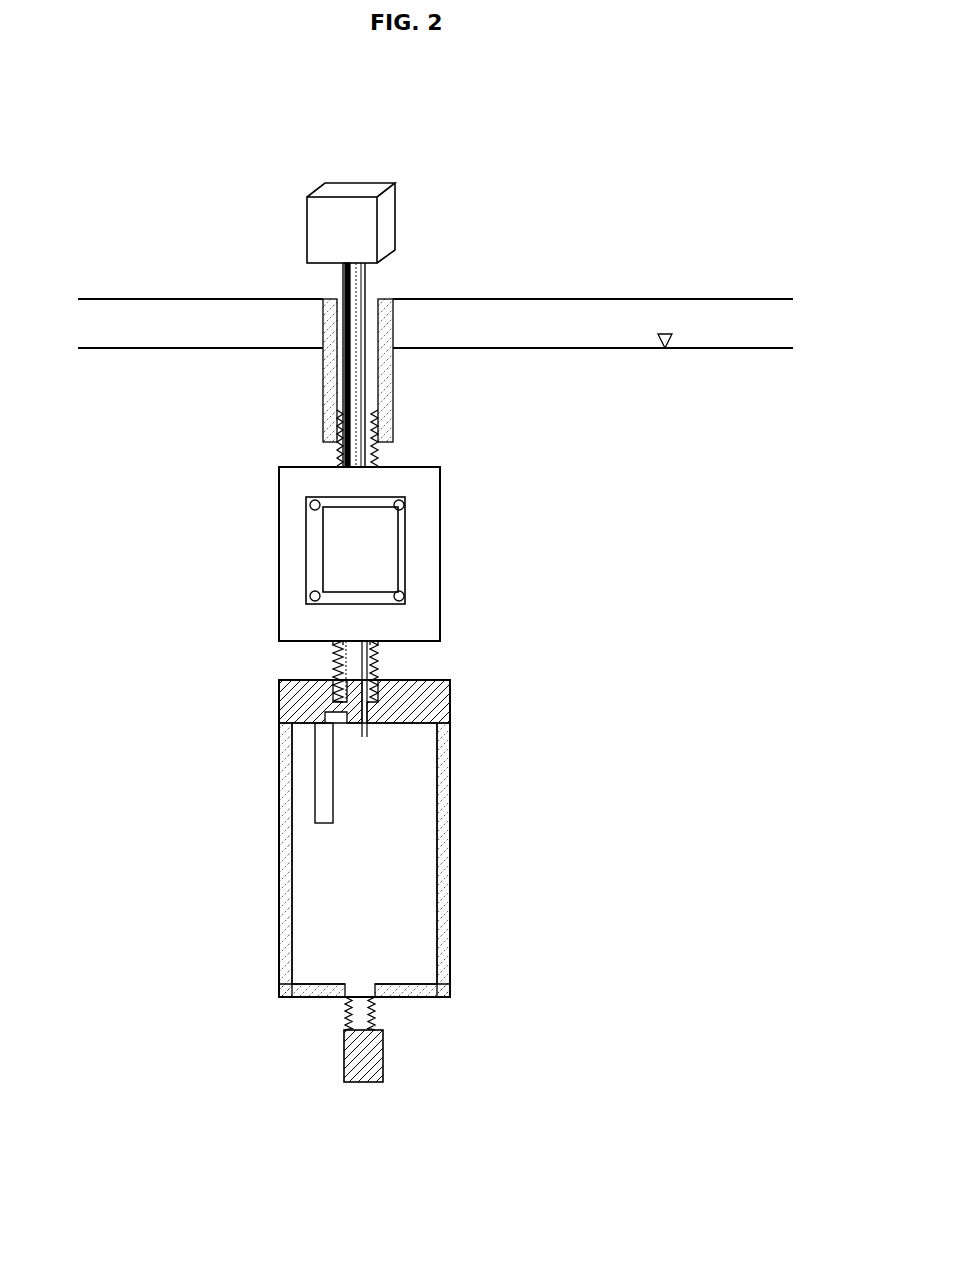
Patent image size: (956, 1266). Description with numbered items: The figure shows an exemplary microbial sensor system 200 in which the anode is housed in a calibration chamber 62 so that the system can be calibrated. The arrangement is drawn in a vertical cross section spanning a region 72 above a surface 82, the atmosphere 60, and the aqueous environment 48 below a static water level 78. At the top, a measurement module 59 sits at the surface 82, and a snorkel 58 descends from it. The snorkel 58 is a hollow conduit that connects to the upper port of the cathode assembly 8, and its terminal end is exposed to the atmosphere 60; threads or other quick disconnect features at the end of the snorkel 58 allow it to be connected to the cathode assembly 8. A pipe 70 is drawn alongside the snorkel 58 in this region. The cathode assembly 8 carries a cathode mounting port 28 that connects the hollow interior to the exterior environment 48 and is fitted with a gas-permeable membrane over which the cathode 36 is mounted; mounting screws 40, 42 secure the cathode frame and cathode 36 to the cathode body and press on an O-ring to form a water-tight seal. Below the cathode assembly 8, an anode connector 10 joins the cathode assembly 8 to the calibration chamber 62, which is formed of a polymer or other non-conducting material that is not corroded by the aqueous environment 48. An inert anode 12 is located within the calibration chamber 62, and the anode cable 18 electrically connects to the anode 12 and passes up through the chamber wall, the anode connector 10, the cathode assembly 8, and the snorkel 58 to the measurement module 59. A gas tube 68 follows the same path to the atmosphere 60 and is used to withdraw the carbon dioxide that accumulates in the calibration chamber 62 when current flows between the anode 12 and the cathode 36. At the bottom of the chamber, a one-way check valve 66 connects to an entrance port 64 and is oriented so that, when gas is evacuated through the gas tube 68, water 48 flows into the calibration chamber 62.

The microbial sensor system 200 is at (600, 130).
The atmosphere 60 is at (554, 156).
The exterior region 72 is at (133, 221).
The surface 82 is at (182, 302).
The static water level 78 is at (665, 328).
The aqueous environment 48 is at (730, 404).
The measurement module 59 is at (307, 251).
The gas tube 68 is at (368, 283).
The conduit pipe 70 is at (378, 365).
The snorkel 58 is at (327, 403).
The anode cable 18 is at (338, 455).
The cathode assembly 8 is at (258, 553).
The cathode mounting port 28 is at (373, 550).
The cathode 36 is at (360, 549).
The mounting screw 42 is at (403, 503).
The mounting screw 40 is at (404, 600).
The anode connector 10 is at (376, 681).
The inert anode 12 is at (334, 809).
The calibration chamber 62 is at (445, 851).
The entrance port 64 is at (364, 853).
The one-way check valve 66 is at (408, 1073).